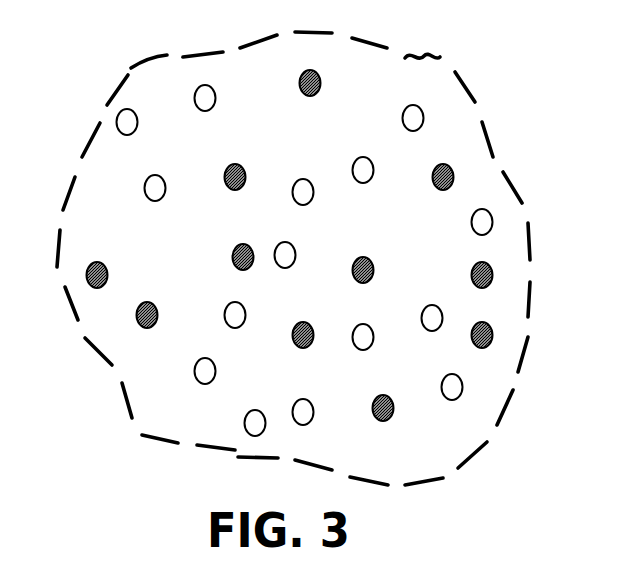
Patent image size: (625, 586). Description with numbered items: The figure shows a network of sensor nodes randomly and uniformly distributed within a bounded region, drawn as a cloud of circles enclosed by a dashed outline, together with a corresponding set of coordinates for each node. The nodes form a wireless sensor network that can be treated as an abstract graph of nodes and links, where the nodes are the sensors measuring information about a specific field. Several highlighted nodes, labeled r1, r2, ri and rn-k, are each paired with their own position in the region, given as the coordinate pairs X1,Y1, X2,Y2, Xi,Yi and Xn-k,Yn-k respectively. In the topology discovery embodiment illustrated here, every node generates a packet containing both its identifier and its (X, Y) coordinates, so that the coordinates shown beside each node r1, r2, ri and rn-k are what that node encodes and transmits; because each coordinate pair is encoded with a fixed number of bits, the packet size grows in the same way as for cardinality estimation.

The radius of first sensing element r1 is at (226, 186).
The radius of second sensing element r2 is at (443, 194).
The radius of i-th sensing element ri is at (147, 302).
The radius of (n-k)-th sensing element rn-k is at (289, 349).
The coordinates of node s1 X1,Y1 is at (103, 257).
The coordinates of node s2 X2,Y2 is at (312, 102).
The coordinates of node si Xi,Yi is at (366, 255).
The coordinates of node sn-k Xn-k,Yn-k is at (383, 427).